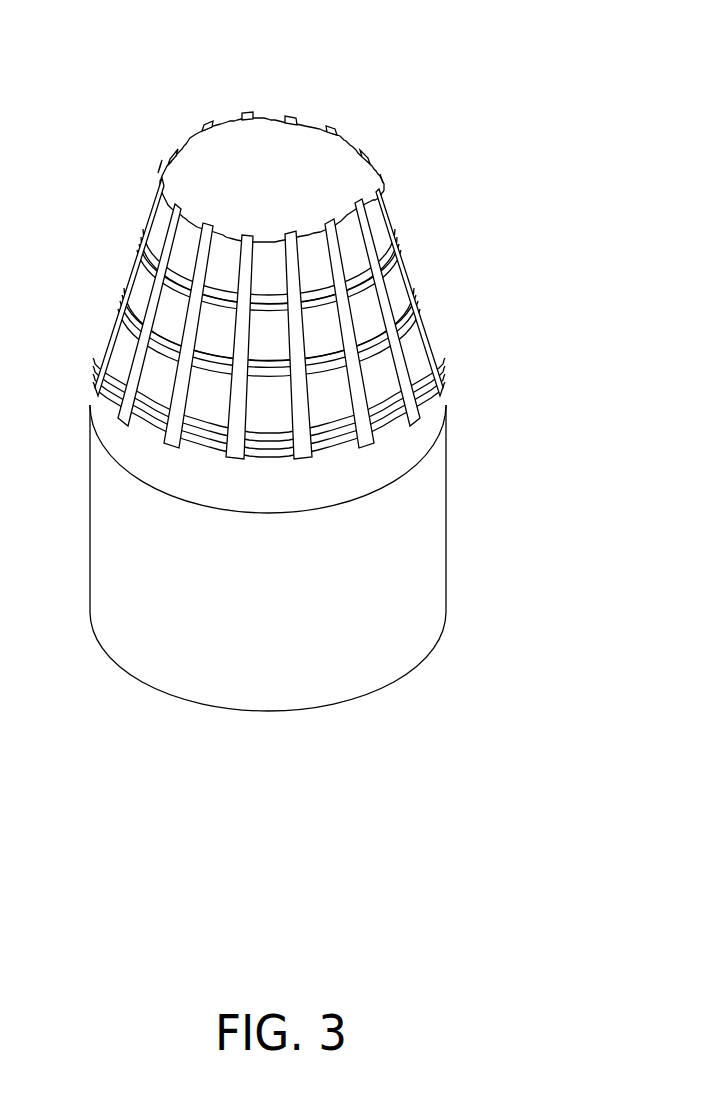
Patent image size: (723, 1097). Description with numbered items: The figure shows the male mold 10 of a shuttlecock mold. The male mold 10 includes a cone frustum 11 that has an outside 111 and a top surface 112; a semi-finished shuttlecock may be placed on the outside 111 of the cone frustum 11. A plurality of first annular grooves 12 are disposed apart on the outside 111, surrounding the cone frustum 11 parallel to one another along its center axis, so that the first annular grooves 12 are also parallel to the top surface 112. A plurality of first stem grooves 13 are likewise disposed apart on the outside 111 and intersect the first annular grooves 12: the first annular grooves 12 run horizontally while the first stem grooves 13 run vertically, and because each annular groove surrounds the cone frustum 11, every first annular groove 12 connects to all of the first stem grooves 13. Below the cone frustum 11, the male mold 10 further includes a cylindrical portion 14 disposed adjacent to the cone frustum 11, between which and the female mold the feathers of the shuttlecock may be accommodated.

The male mold 10 is at (150, 55).
The cone frustum 11 is at (195, 138).
The outside 111 is at (158, 207).
The top surface 112 is at (302, 145).
The first annular grooves 12 is at (418, 270).
The first stem grooves 13 is at (165, 165).
The cylindrical portion 14 is at (110, 522).